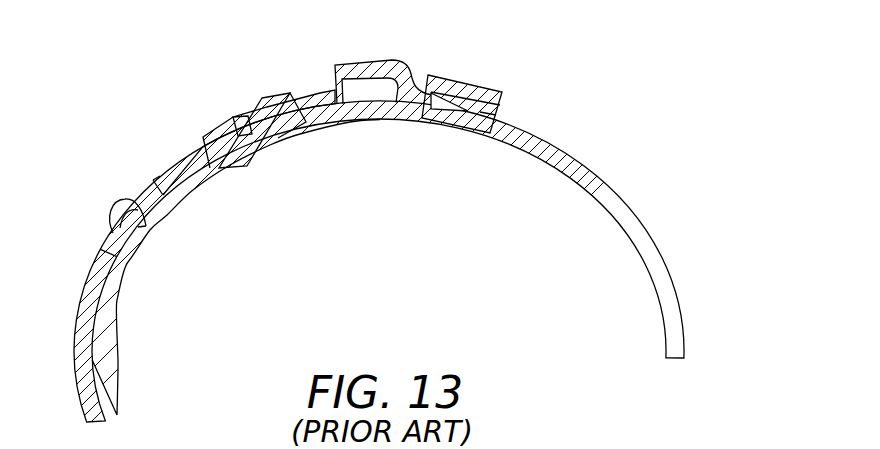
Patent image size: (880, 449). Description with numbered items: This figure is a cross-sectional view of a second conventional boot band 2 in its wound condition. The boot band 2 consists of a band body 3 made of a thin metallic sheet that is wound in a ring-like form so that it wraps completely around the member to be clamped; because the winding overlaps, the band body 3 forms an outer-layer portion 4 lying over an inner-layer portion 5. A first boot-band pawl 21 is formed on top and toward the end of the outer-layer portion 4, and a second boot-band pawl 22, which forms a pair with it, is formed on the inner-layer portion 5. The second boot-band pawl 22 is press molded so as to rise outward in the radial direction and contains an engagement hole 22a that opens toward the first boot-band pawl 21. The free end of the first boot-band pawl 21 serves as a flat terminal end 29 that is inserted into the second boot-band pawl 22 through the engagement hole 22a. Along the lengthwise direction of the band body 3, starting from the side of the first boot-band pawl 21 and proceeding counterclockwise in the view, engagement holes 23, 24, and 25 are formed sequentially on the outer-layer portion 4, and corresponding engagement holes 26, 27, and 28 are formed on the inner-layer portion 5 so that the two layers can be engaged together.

The second conventional boot band 2 is at (645, 140).
The band body 3 is at (682, 288).
The outer-layer portion 4 is at (147, 187).
The inner-layer portion 5 is at (365, 123).
The first boot-band pawl 21 is at (350, 60).
The second boot-band pawl 22 is at (493, 88).
The engagement hole 22a is at (486, 110).
The engagement hole 23 is at (246, 118).
The engagement hole 24 is at (172, 170).
The engagement hole 25 is at (112, 247).
The engagement hole 26 is at (272, 92).
The engagement hole 27 is at (208, 142).
The engagement hole 28 is at (122, 206).
The terminal end 29 is at (436, 73).